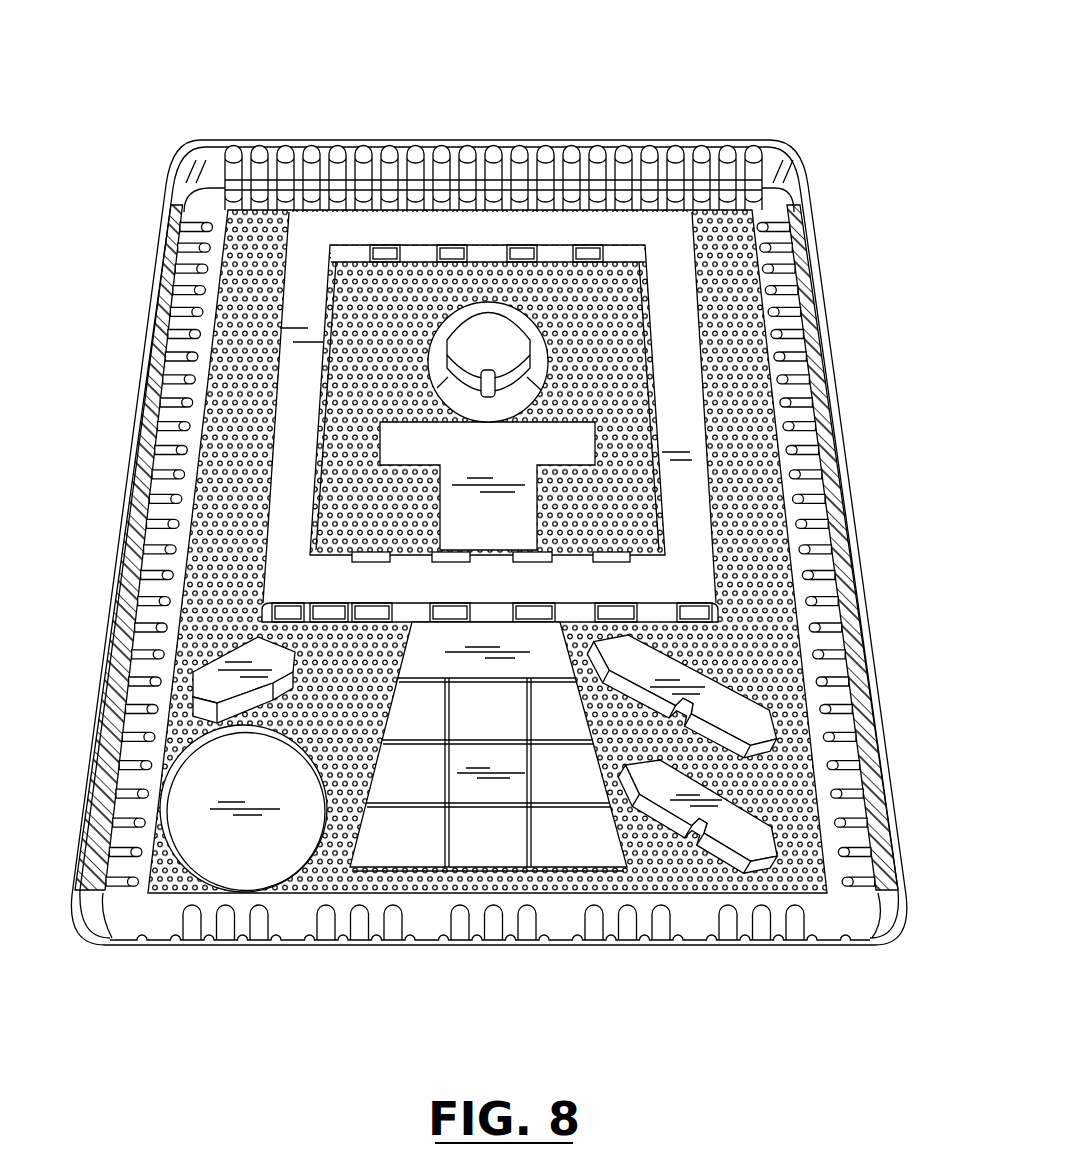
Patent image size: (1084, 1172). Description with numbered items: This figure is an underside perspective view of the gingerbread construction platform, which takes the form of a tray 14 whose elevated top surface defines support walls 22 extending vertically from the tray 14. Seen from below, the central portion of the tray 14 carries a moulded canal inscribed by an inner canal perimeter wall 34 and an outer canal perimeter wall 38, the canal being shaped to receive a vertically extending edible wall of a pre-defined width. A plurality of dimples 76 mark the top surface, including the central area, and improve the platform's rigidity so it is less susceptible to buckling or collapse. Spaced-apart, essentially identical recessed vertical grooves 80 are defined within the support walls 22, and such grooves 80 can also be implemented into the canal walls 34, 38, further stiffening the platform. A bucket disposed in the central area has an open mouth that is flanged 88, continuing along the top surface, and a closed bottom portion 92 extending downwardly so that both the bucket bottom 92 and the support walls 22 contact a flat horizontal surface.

The tray 14 is at (84, 940).
The support walls 22 is at (891, 906).
The inner canal perimeter wall 34 is at (643, 378).
The outer canal perimeter wall 38 is at (700, 360).
The dimples 76 is at (333, 853).
The recessed vertical grooves 80 is at (488, 380).
The flanged open mouth portion 88 is at (537, 373).
The closed bottom portion 92 is at (472, 332).